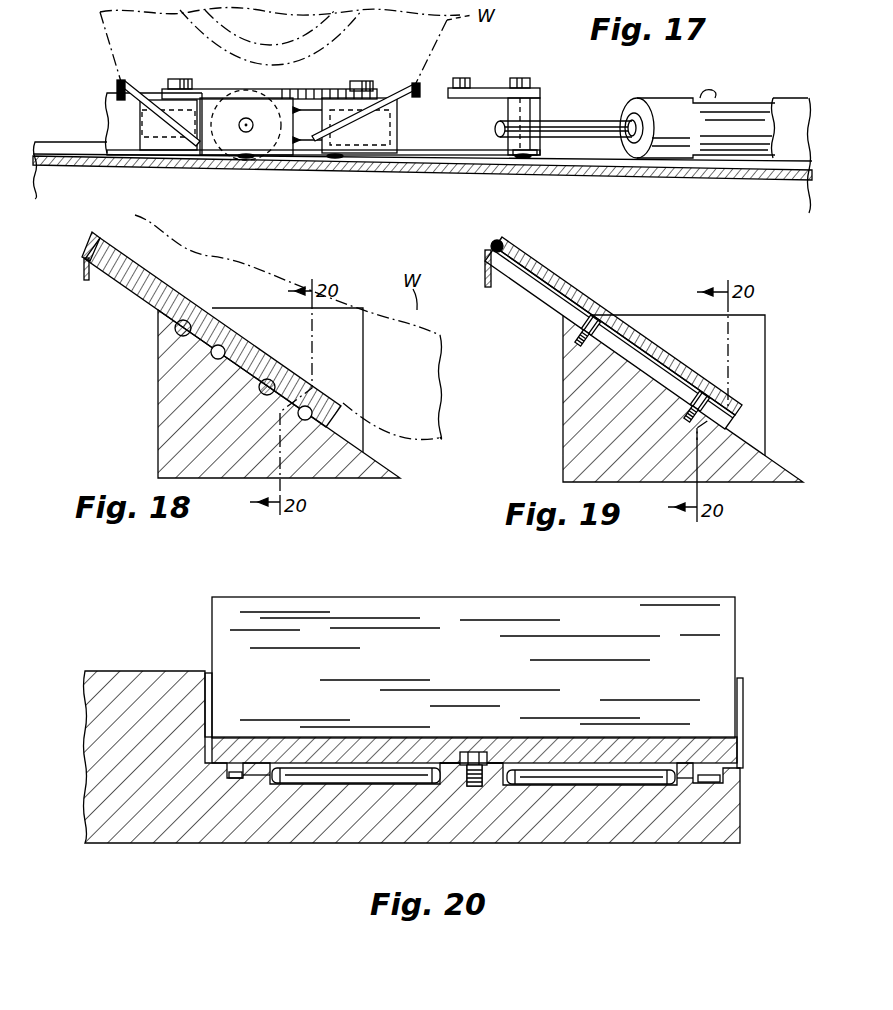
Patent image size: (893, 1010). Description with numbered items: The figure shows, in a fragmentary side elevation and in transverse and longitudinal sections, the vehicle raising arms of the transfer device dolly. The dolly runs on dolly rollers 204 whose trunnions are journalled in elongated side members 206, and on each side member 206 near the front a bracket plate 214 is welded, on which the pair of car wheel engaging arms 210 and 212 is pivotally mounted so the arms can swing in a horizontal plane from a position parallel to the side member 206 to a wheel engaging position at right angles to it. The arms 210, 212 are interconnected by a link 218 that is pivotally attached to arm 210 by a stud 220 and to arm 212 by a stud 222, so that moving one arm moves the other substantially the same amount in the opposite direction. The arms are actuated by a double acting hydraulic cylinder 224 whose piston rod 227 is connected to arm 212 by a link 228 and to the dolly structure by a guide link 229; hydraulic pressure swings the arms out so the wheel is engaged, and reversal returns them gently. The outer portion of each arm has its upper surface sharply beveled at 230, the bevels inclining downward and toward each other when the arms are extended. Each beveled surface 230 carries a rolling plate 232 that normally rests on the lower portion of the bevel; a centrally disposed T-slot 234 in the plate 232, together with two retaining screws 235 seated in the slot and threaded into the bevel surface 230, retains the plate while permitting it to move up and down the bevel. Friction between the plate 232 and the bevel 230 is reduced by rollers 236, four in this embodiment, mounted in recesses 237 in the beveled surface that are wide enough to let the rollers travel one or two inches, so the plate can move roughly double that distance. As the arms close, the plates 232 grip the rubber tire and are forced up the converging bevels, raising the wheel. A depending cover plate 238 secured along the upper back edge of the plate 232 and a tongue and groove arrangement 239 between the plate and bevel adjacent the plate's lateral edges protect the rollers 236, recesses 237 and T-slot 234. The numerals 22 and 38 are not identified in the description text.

In FIG. 17, the guide way 22 is at (633, 182).
In FIG. 17, the base plate 38 is at (447, 170).
In FIG. 17, the dolly rollers 204 is at (243, 158).
In FIG. 17, the elongated side members 206 is at (780, 155).
In FIG. 17, the arm 210 is at (163, 143).
In FIG. 18, the arm 210 is at (197, 438).
In FIG. 19, the arm 210 is at (588, 432).
In FIG. 20, the arm 210 is at (133, 723).
In FIG. 17, the arm 212 is at (375, 147).
In FIG. 17, the bracket plate 214 is at (105, 125).
In FIG. 17, the link 218 is at (203, 92).
In FIG. 17, the stud 220 is at (178, 78).
In FIG. 17, the stud 222 is at (358, 80).
In FIG. 17, the double acting hydraulic cylinder 224 is at (738, 116).
In FIG. 17, the piston rod 227 is at (583, 124).
In FIG. 17, the link 228 is at (413, 153).
In FIG. 17, the guide link 229 is at (487, 86).
In FIG. 18, the beveled surface 230 is at (383, 457).
In FIG. 19, the beveled surface 230 is at (747, 440).
In FIG. 20, the beveled surface 230 is at (740, 720).
In FIG. 17, the rolling plate 232 is at (130, 90).
In FIG. 18, the rolling plate 232 is at (128, 262).
In FIG. 19, the rolling plate 232 is at (593, 252).
In FIG. 20, the rolling plate 232 is at (570, 750).
In FIG. 19, the T-slot 234 is at (553, 293).
In FIG. 20, the T-slot 234 is at (458, 745).
In FIG. 19, the retaining screws 235 is at (610, 323).
In FIG. 20, the retaining screws 235 is at (474, 750).
In FIG. 18, the rollers 236 is at (172, 328).
In FIG. 20, the rollers 236 is at (325, 775).
In FIG. 18, the recesses 237 is at (200, 354).
In FIG. 20, the recesses 237 is at (265, 783).
In FIG. 17, the depending cover plate 238 is at (118, 95).
In FIG. 18, the depending cover plate 238 is at (84, 278).
In FIG. 19, the depending cover plate 238 is at (487, 277).
In FIG. 20, the tongue and groove arrangement 239 is at (228, 780).